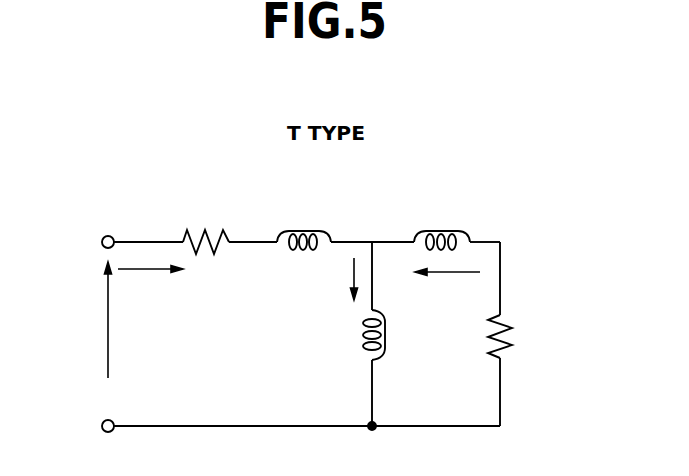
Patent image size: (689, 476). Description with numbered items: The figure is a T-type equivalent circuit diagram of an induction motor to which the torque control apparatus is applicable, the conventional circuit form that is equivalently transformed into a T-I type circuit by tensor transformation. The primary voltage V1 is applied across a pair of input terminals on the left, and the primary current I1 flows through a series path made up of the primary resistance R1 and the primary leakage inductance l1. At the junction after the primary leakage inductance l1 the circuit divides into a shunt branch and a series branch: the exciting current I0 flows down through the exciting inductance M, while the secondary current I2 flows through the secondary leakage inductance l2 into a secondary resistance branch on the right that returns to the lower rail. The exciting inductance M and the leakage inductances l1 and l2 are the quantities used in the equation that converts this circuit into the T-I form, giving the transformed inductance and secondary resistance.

The primary resistance R1 is at (206, 227).
The primary leakage inductance l1 is at (304, 228).
The secondary leakage inductance l2 is at (442, 228).
The exciting inductance M is at (361, 335).
The primary voltage V1 is at (95, 320).
The primary current I1 is at (150, 282).
The exciting current I0 is at (343, 279).
The secondary current I2 is at (447, 285).